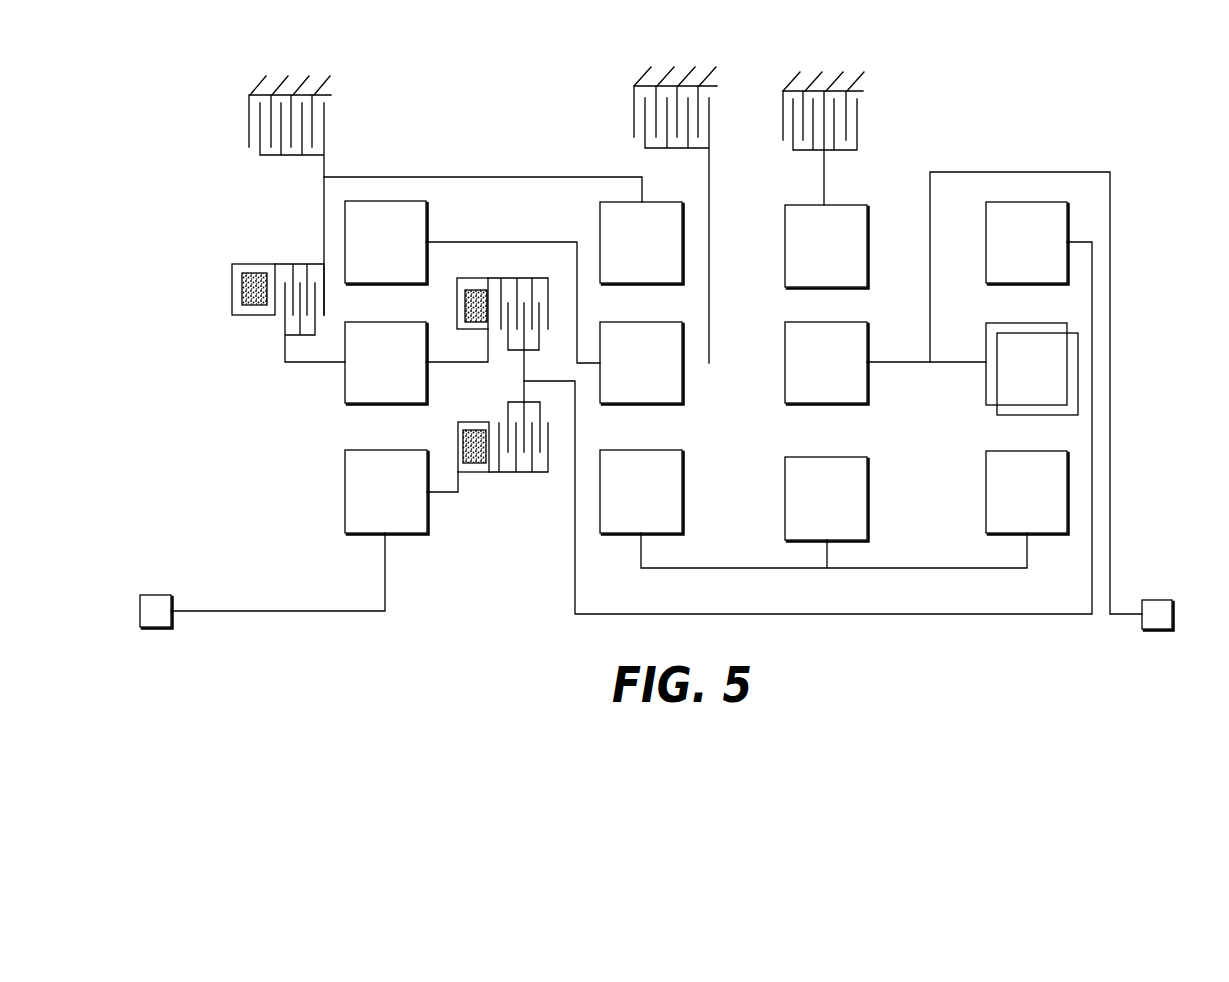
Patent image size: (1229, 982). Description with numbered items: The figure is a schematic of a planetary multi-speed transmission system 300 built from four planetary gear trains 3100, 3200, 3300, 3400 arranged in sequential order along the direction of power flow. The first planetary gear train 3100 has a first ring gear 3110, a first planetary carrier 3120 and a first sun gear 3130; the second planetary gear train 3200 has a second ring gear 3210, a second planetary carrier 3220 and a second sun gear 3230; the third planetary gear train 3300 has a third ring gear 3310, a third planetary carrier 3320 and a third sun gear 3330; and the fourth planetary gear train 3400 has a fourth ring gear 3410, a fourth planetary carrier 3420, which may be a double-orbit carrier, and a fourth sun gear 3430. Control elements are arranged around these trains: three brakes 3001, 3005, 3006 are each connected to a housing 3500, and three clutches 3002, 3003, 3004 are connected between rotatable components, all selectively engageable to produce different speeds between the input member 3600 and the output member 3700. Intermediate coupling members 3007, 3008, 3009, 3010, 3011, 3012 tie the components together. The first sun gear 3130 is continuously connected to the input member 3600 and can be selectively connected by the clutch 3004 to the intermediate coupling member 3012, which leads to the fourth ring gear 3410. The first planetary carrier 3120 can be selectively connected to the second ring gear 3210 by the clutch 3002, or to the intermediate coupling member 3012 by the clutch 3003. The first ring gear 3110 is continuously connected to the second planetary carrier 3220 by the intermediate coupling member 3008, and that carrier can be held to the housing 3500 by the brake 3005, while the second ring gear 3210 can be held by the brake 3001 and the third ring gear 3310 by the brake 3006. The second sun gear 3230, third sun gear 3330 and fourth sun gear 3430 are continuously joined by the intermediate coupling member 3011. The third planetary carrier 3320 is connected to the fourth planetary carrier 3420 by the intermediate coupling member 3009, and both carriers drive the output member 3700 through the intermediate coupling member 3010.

The planetary multi-speed transmission system 300 is at (1124, 82).
The brake 3001 is at (248, 121).
The clutch 3002 is at (232, 290).
The clutch 3003 is at (468, 277).
The clutch 3004 is at (483, 475).
The brake 3005 is at (634, 89).
The brake 3006 is at (858, 112).
The intermediate coupling member 3007 is at (438, 177).
The intermediate coupling member 3008 is at (540, 242).
The intermediate coupling member 3009 is at (902, 364).
The intermediate coupling member 3010 is at (932, 300).
The intermediate coupling member 3011 is at (920, 569).
The intermediate coupling member 3012 is at (925, 614).
The first planetary gear train 3100 is at (387, 162).
The first ring gear 3110 is at (369, 253).
The first planetary carrier 3120 is at (369, 373).
The first sun gear 3130 is at (369, 502).
The second planetary gear train 3200 is at (618, 164).
The second ring gear 3210 is at (624, 253).
The second planetary carrier 3220 is at (624, 373).
The second sun gear 3230 is at (624, 502).
The third planetary gear train 3300 is at (868, 188).
The third ring gear 3310 is at (809, 256).
The third planetary carrier 3320 is at (809, 373).
The third sun gear 3330 is at (809, 509).
The fourth planetary gear train 3400 is at (1029, 162).
The fourth ring gear 3410 is at (1009, 253).
The fourth planetary carrier 3420 is at (1013, 380).
The fourth sun gear 3430 is at (1009, 502).
The housing 3500 is at (287, 82).
The input member 3600 is at (165, 595).
The output member 3700 is at (1165, 632).